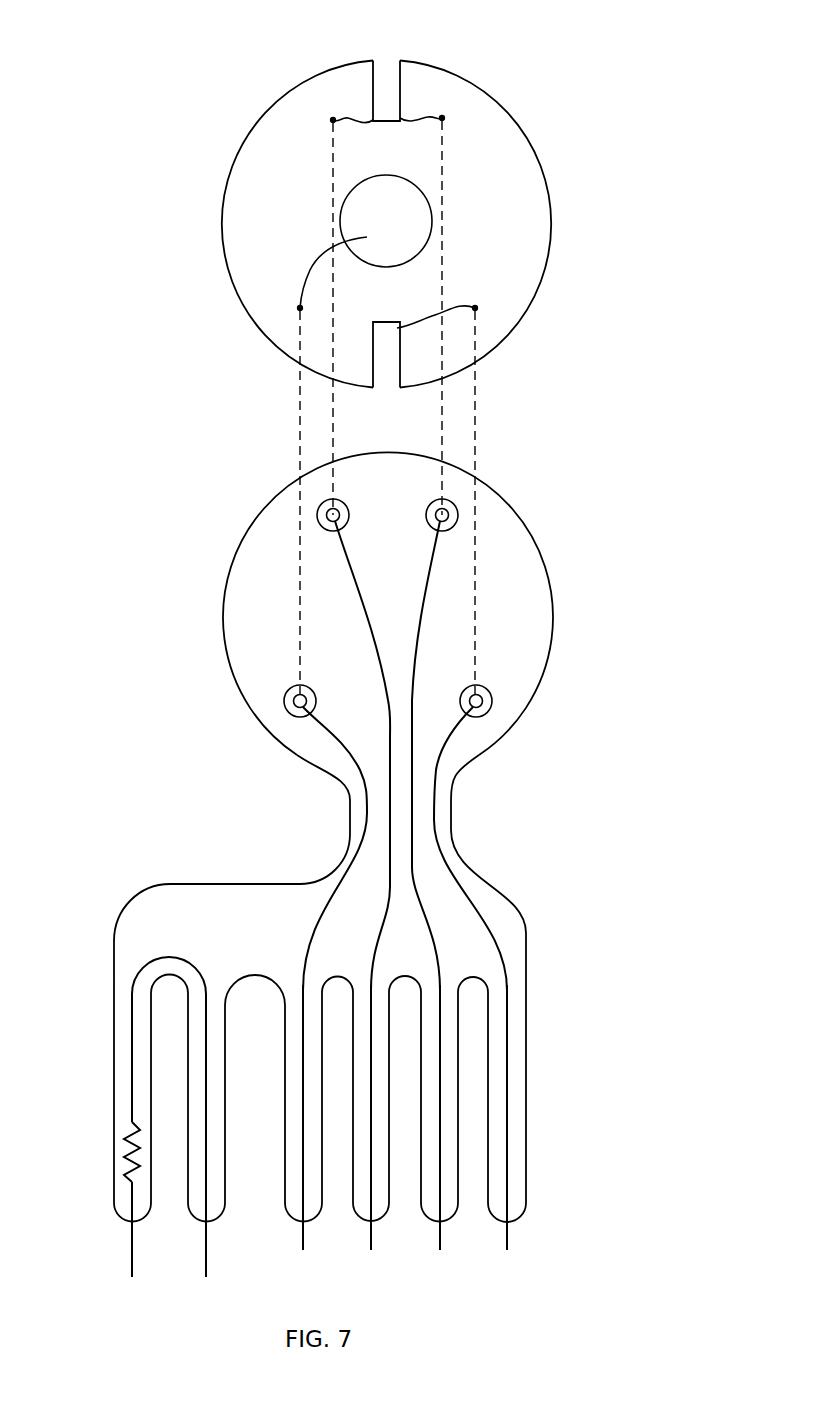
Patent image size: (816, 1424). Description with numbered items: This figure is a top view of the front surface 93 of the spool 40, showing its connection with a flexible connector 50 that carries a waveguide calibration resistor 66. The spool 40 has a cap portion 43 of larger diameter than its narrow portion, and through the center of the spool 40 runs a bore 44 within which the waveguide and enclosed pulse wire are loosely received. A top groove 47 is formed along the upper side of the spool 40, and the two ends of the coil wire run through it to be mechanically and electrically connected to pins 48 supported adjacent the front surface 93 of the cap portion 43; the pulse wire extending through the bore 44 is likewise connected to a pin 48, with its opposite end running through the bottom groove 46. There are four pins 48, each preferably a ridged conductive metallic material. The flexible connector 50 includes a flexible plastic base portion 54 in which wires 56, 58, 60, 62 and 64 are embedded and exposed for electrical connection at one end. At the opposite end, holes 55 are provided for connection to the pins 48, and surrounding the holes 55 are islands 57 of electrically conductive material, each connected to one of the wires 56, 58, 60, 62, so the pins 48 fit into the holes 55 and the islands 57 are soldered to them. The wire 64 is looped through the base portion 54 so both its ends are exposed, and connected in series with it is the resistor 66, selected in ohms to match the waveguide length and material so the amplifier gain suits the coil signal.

The spool 40 is at (175, 120).
The cap portion 43 is at (546, 228).
The bore 44 is at (384, 186).
The bottom notch 46 is at (388, 388).
The top groove 47 is at (384, 60).
The pins 48 is at (326, 134).
The front surface 93 is at (229, 228).
The flexible connector 50 is at (214, 744).
The flexible plastic base portion 54 is at (549, 618).
The holes 55 is at (432, 504).
The islands 57 is at (326, 535).
The wire 56 is at (300, 1239).
The wire 58 is at (368, 1239).
The wire 60 is at (437, 1239).
The wire 62 is at (505, 1239).
The wire 64 is at (128, 1239).
The resistor 66 is at (126, 1153).